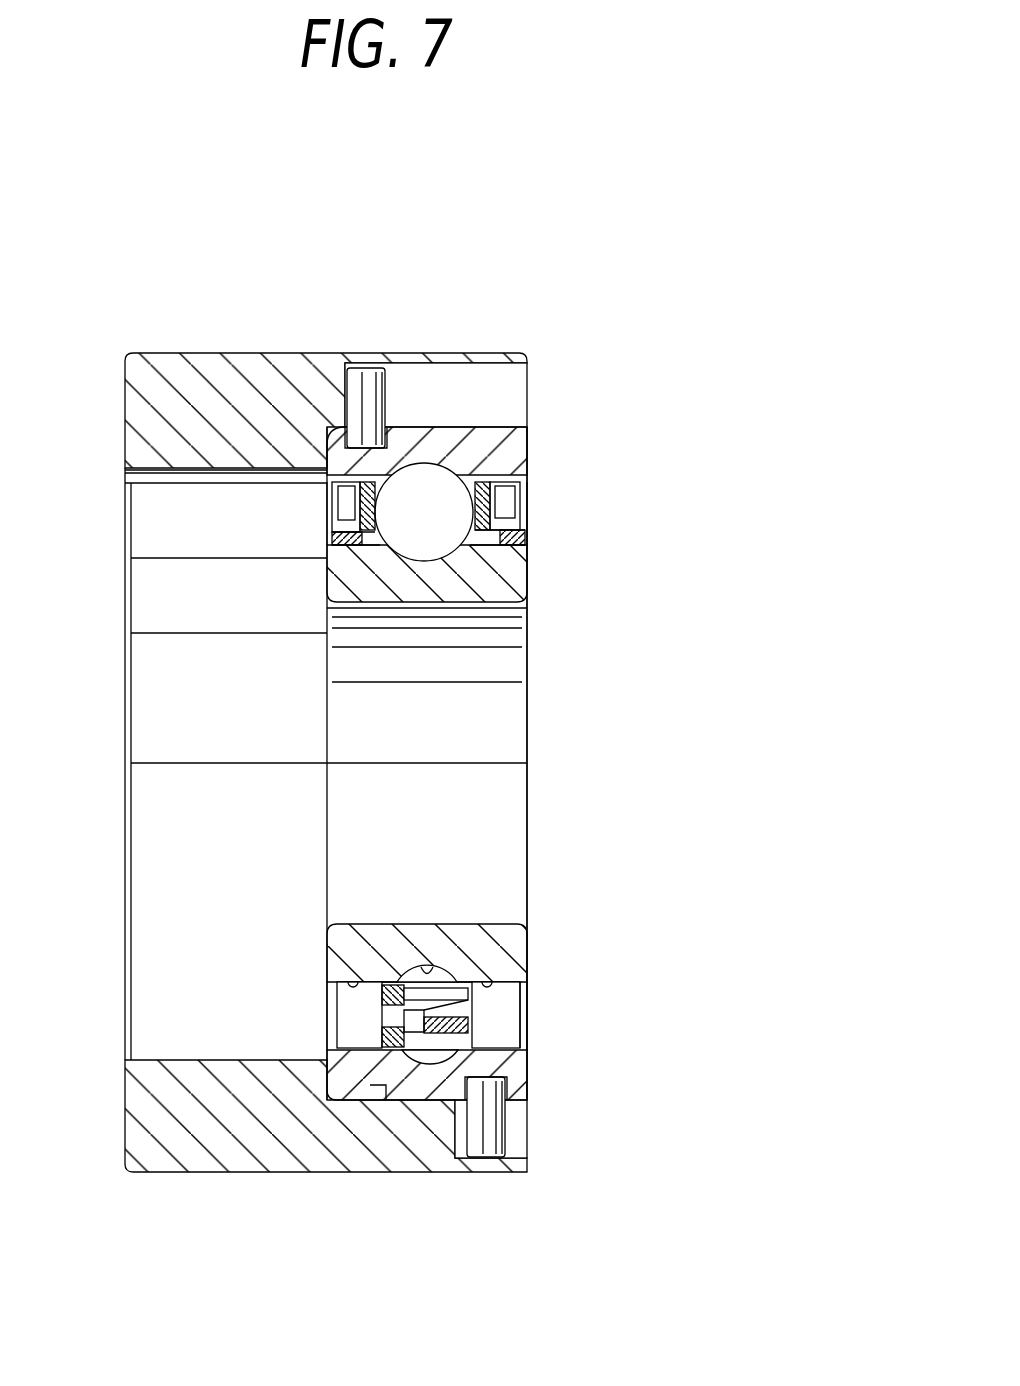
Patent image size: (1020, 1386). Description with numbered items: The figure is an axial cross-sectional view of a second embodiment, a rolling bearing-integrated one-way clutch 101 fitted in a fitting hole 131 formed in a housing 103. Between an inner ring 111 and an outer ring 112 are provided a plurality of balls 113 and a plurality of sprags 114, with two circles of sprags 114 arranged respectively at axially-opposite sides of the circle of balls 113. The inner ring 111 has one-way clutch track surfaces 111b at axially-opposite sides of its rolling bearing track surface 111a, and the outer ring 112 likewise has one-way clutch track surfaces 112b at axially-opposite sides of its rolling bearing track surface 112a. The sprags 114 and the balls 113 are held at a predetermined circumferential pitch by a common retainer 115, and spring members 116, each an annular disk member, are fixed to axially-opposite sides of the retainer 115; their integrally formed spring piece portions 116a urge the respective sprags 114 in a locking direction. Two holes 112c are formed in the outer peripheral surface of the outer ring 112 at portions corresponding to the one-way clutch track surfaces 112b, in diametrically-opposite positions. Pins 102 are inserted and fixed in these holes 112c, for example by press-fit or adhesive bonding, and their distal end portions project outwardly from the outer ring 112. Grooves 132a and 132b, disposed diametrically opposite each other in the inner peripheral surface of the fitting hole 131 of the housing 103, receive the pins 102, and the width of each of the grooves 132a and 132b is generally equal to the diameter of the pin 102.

The rolling bearing-integrated one-way clutch 101 is at (580, 415).
The pin 102 is at (362, 395).
The housing 103 is at (238, 1140).
The inner ring 111 is at (442, 600).
The rolling bearing track surface 111a is at (405, 940).
The one-way clutch track surface 111b is at (343, 978).
The outer ring 112 is at (503, 450).
The rolling bearing track surface 112a is at (447, 1055).
The one-way clutch track surface 112b is at (345, 1035).
The hole 112c is at (392, 395).
The ball 113 is at (443, 540).
The sprag 114 is at (507, 1000).
The retainer 115 is at (410, 1045).
The spring member 116 is at (332, 498).
The spring piece portion 116a is at (352, 488).
The fitting hole 131 is at (378, 1090).
The groove 132a is at (508, 388).
The groove 132b is at (515, 1130).